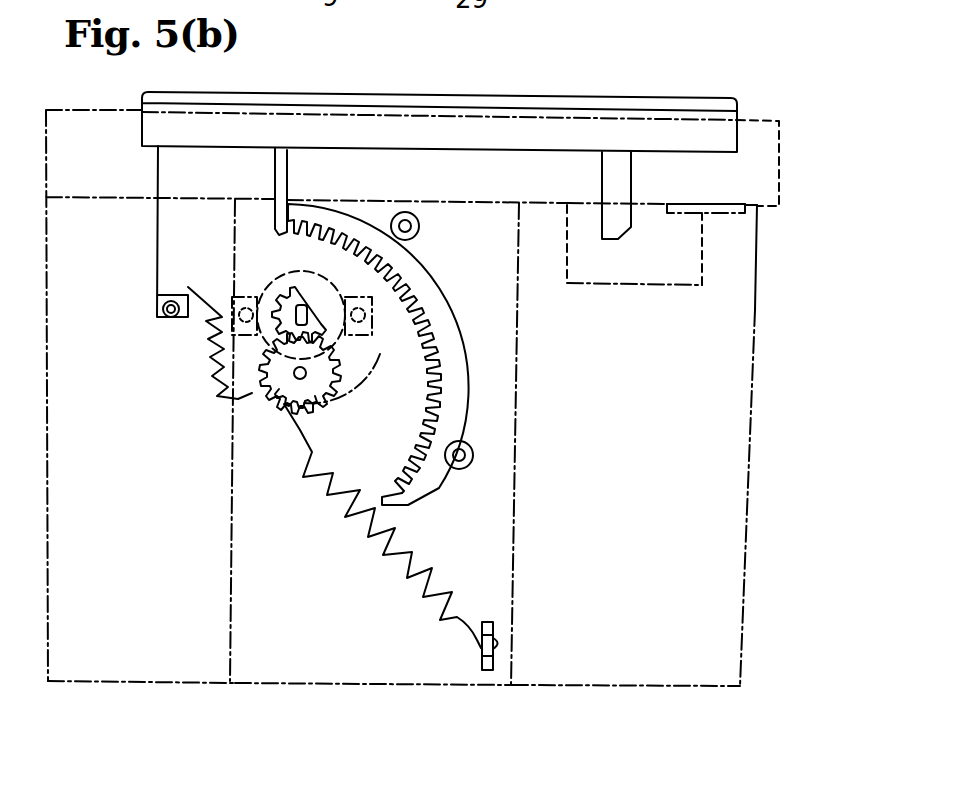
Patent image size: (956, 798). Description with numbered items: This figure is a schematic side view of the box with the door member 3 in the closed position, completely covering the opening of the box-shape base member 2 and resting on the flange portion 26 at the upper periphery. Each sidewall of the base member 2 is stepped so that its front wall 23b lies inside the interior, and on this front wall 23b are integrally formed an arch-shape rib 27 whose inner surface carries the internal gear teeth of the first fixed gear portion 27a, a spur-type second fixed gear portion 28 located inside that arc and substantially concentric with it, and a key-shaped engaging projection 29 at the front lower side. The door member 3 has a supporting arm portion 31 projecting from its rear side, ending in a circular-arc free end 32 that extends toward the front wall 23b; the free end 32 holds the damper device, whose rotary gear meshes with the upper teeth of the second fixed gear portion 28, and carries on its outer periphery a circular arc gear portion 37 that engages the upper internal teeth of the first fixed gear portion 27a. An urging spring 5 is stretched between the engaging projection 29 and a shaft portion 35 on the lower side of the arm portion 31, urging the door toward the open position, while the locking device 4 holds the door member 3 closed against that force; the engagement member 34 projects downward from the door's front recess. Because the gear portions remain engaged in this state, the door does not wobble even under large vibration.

The base member 2 is at (755, 306).
The door member 3 is at (687, 95).
The locking device 4 is at (684, 258).
The urging spring 5 is at (400, 580).
The front wall 23b is at (445, 668).
The flange portion 26 is at (770, 140).
The arch-shape rib 27 is at (467, 392).
The first internal type fixed gear portion 27a is at (424, 421).
The second fixed gear portion 28 is at (283, 412).
The engaging projection 29 is at (488, 670).
The supporting arm portion 31 is at (178, 232).
The free end 32 is at (252, 357).
The engagement member 34 is at (623, 173).
The shaft portion 35 is at (168, 322).
The circular arc gear portion 37 is at (392, 356).